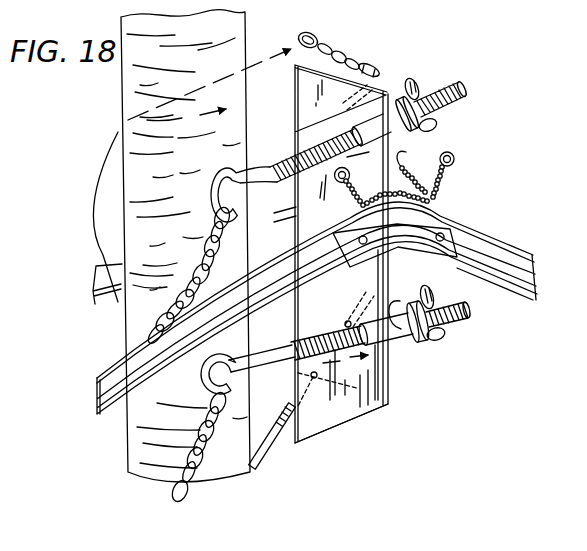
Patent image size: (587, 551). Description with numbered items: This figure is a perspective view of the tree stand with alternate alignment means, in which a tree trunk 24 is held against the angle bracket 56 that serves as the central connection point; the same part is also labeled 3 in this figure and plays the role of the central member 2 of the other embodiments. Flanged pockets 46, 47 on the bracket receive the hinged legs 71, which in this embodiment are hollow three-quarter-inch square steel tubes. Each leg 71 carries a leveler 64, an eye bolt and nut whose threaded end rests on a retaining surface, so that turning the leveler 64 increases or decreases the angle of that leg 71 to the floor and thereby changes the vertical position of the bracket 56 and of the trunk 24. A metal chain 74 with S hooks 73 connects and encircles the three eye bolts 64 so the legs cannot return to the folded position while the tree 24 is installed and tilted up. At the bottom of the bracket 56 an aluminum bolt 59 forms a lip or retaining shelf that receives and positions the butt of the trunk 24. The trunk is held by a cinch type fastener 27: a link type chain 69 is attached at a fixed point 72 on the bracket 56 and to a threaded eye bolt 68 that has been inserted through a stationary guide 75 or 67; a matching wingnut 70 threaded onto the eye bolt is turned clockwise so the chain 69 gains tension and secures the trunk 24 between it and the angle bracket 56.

The tree trunk 24 is at (152, 188).
The angle bracket 56 is at (279, 230).
The tree stand 3 is at (378, 416).
The flanged pocket 46 is at (334, 302).
The flanged pocket 47 is at (478, 220).
The central member 2 is at (399, 247).
The threaded eye bolt 68 is at (230, 168).
The hollow square steel leg 71 is at (276, 229).
The stationary guide 75 is at (386, 364).
The stationary guide 67 is at (393, 96).
The wingnut 70 is at (423, 77).
The S hook 73 is at (402, 136).
The fixed point 72 is at (379, 57).
The leveler 64 is at (458, 166).
The metal chain 74 is at (394, 176).
The link type chain 69 is at (226, 258).
The cinch type fastener 27 is at (185, 503).
The aluminum bolt 59 is at (284, 440).